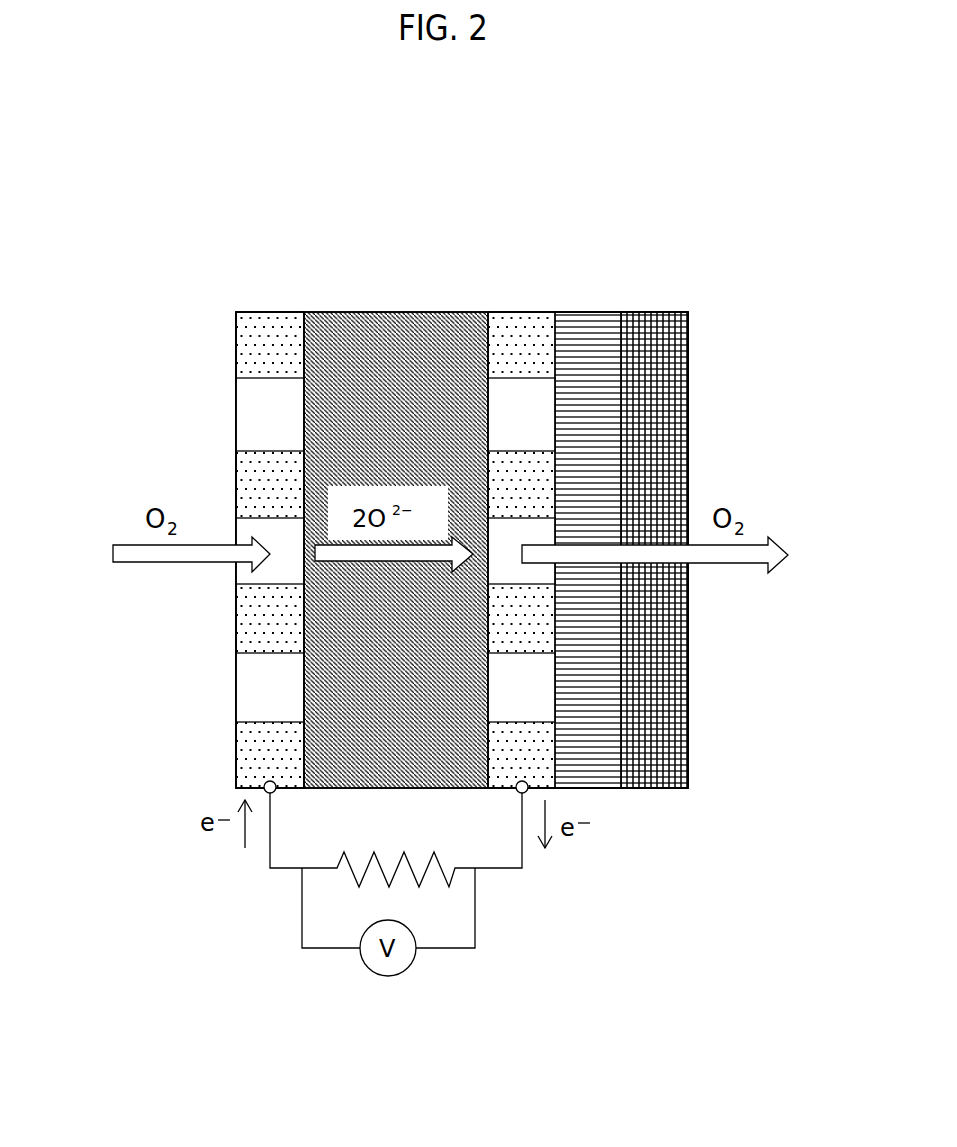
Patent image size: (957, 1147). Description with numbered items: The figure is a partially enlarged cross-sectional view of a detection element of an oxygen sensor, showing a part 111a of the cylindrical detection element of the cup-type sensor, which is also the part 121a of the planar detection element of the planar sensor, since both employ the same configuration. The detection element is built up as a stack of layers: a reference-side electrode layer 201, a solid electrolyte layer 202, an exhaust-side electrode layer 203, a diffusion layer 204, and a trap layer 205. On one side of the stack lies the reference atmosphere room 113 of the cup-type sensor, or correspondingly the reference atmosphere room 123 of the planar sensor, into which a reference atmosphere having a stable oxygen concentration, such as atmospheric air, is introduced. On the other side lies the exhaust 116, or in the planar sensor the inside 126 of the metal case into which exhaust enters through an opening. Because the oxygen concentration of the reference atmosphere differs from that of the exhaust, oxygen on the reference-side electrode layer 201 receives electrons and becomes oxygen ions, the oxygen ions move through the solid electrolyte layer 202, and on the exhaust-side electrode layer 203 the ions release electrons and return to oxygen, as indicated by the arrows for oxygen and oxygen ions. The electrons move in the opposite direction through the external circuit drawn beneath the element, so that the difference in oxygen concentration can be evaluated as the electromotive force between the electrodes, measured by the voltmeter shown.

The part of detection element 111a is at (672, 106).
The part of detection element 121a is at (672, 106).
The reference-side electrode layer 201 is at (267, 323).
The solid electrolyte layer 202 is at (387, 323).
The exhaust-side electrode layer 203 is at (513, 325).
The diffusion layer 204 is at (595, 325).
The trap layer 205 is at (673, 347).
The reference atmosphere room 113 is at (222, 421).
The reference atmosphere room 123 is at (222, 421).
The exhaust 116 is at (845, 423).
The inside of the case 126 is at (845, 423).